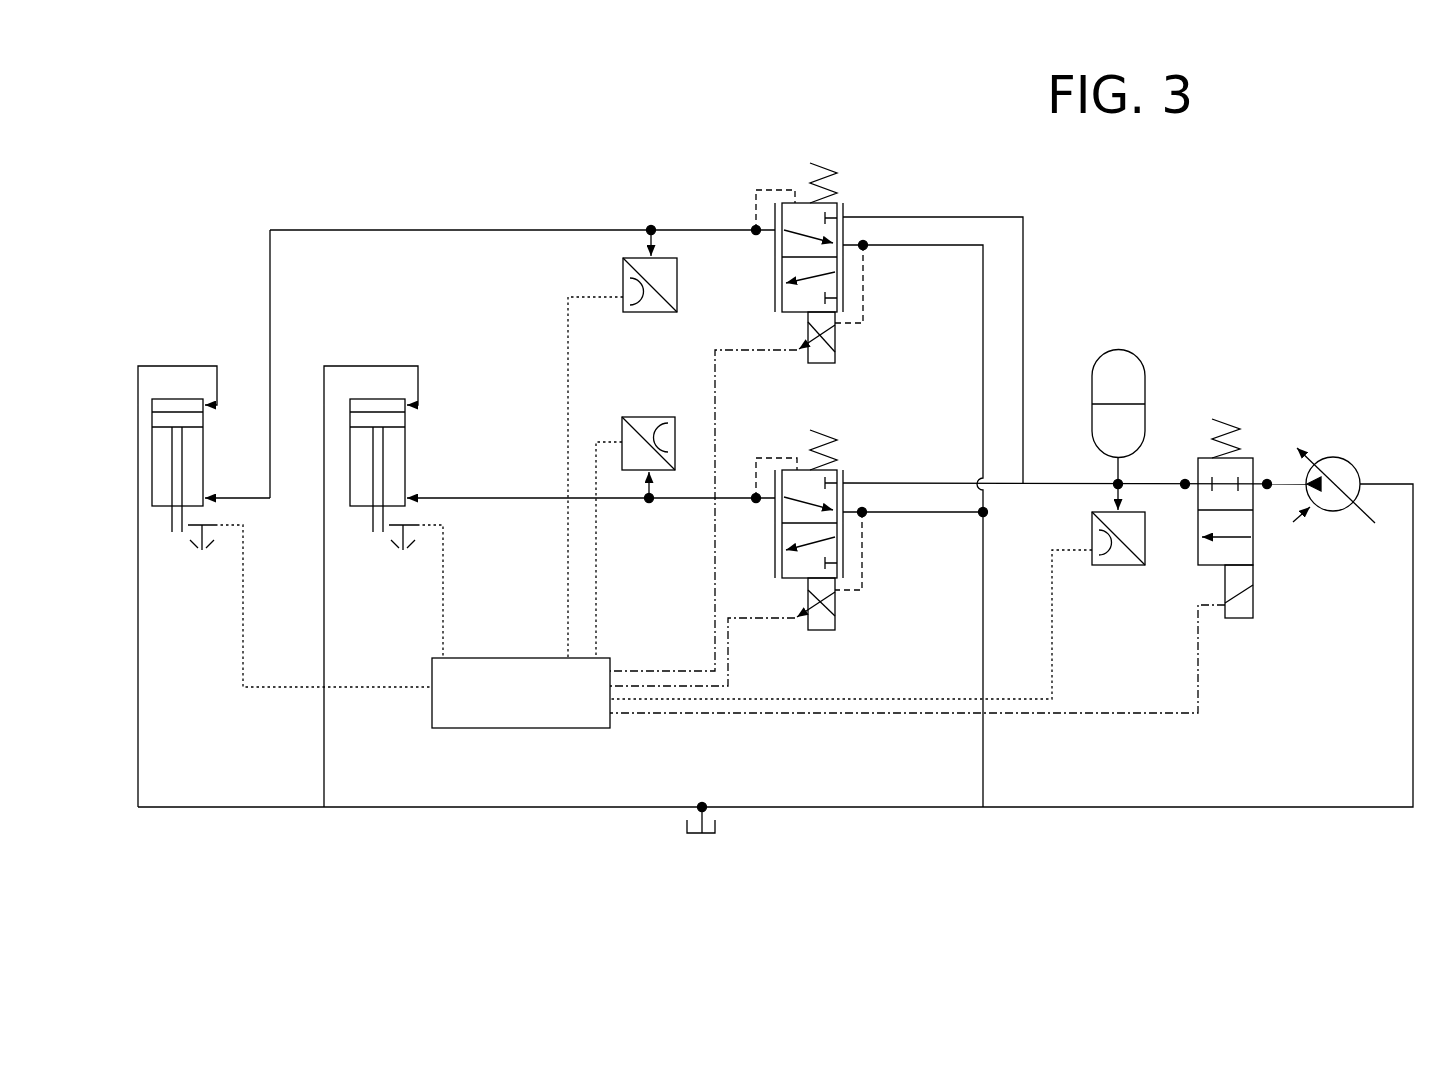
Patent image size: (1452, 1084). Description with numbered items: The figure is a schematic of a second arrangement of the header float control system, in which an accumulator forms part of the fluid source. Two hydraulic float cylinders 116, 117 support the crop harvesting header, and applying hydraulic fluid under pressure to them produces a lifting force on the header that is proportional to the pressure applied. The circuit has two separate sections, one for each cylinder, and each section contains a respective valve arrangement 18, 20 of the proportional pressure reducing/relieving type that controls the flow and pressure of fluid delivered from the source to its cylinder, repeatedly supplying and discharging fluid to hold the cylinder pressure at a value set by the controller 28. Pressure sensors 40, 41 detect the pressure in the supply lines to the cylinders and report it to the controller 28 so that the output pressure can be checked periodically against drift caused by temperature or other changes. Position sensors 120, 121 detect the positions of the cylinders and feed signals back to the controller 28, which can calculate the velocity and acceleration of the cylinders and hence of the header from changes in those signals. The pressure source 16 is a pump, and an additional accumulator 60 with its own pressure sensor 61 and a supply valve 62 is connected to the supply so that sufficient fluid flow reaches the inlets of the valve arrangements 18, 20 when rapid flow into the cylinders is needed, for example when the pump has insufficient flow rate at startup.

The pressure source 16 is at (1352, 453).
The valve arrangement 18 is at (867, 294).
The valve arrangement 20 is at (870, 553).
The controller 28 is at (477, 663).
The pressure sensor 40 is at (620, 275).
The pressure sensor 41 is at (648, 415).
The accumulator 60 is at (1128, 377).
The pressure sensor 61 is at (1133, 530).
The supply valve 62 is at (1237, 475).
The hydraulic float cylinder 116 is at (205, 453).
The hydraulic float cylinder 117 is at (407, 438).
The position sensor 120 is at (207, 540).
The position sensor 121 is at (397, 537).